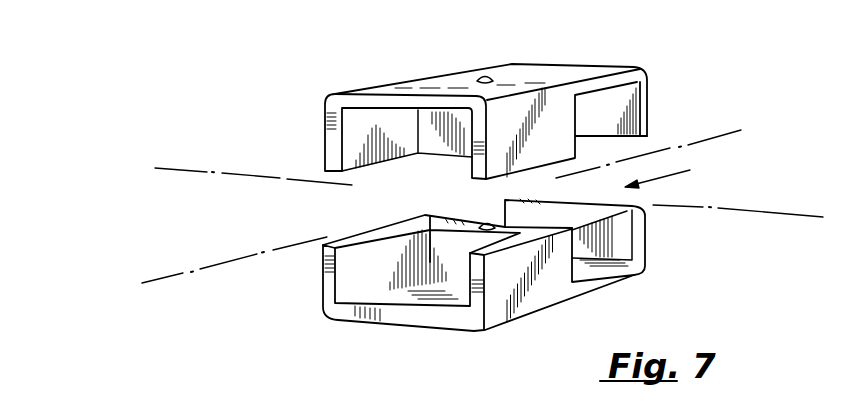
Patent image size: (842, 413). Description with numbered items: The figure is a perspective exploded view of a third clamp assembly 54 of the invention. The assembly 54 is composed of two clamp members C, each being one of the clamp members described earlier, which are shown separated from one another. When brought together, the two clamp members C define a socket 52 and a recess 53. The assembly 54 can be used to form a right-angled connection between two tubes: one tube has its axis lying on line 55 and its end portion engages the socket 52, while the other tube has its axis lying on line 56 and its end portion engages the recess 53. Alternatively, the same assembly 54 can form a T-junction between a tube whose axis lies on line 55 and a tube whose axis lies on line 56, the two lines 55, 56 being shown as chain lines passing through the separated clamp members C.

The socket 52 is at (352, 202).
The third clamp assembly 54 is at (660, 266).
The recess 53 is at (675, 172).
The line 55 is at (212, 262).
The line 56 is at (240, 177).
The clamp member C is at (476, 68).